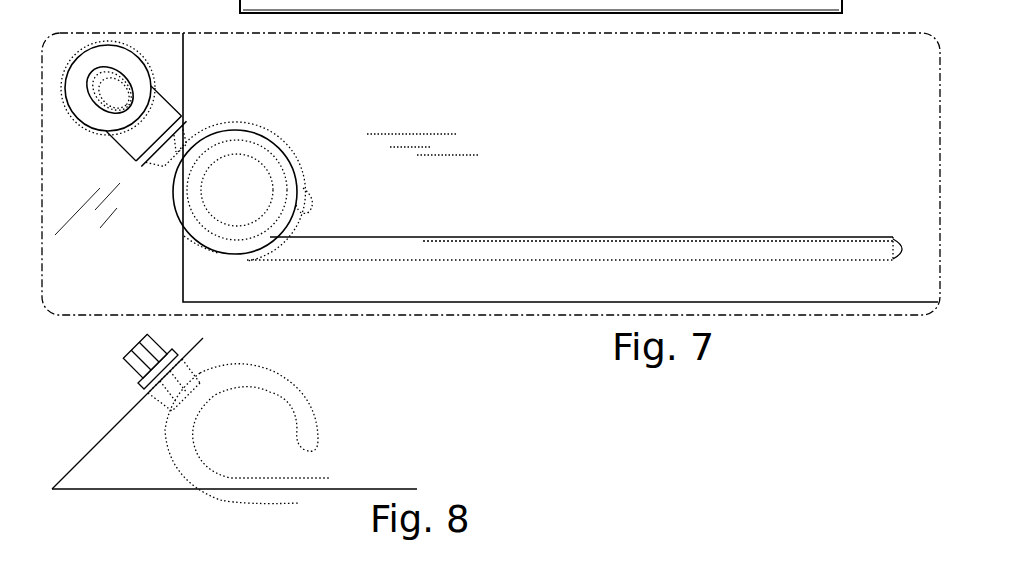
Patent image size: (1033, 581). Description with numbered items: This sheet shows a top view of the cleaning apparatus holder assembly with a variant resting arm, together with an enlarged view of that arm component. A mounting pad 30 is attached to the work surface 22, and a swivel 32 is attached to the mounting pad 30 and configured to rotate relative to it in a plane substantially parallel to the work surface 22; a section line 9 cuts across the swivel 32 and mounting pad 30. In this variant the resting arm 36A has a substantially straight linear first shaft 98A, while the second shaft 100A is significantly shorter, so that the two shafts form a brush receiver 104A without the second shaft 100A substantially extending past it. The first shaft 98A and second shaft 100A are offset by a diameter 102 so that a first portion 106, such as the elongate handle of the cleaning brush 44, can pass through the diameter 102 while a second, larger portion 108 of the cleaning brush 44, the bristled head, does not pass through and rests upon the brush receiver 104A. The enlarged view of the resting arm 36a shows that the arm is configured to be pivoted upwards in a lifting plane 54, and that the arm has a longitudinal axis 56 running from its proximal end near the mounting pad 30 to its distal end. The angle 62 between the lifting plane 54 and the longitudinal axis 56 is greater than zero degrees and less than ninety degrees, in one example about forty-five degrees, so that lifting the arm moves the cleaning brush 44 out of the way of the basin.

In FIG. 7, the section line 9- 9 is at (142, 183).
In FIG. 7, the work surface 22 is at (117, 305).
In FIG. 7, the mounting pad 30 is at (92, 45).
In FIG. 7, the swivel 32 is at (158, 105).
In FIG. 7, the resting arm 36A is at (412, 237).
In FIG. 8, the resting arm 36a is at (315, 478).
In FIG. 7, the cleaning brush 44 is at (275, 140).
In FIG. 8, the lifting plane 54 is at (117, 423).
In FIG. 8, the longitudinal axis 56 is at (395, 489).
In FIG. 8, the angle 62 is at (108, 485).
In FIG. 7, the first shaft 98A is at (585, 237).
In FIG. 7, the second shaft 100A is at (253, 120).
In FIG. 8, the diameter 102 is at (207, 458).
In FIG. 7, the brush receiver 104A is at (150, 216).
In FIG. 7, the first portion 106 is at (213, 162).
In FIG. 7, the larger portion 108 is at (184, 236).